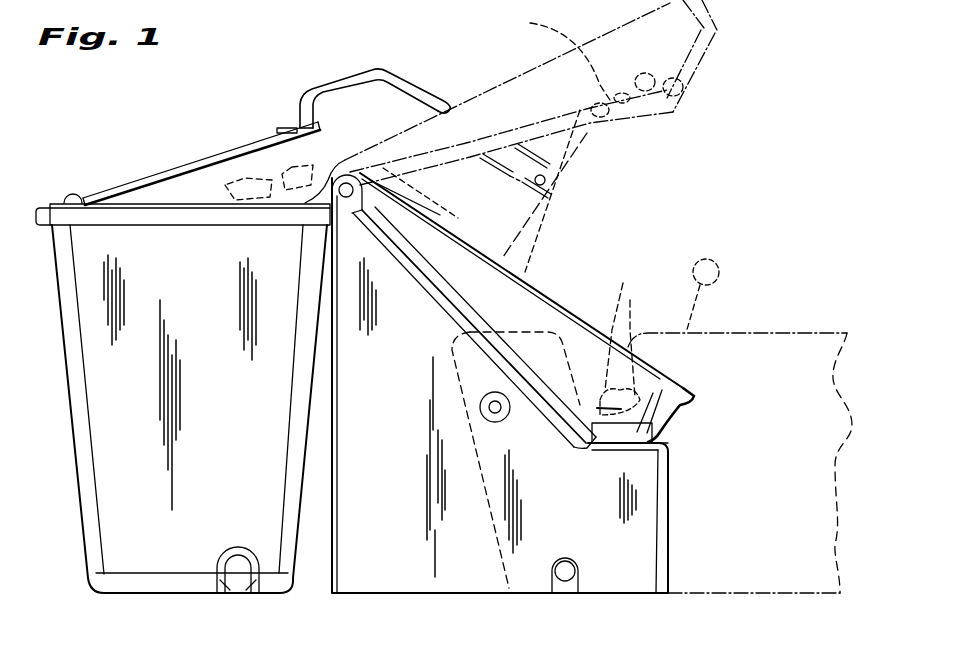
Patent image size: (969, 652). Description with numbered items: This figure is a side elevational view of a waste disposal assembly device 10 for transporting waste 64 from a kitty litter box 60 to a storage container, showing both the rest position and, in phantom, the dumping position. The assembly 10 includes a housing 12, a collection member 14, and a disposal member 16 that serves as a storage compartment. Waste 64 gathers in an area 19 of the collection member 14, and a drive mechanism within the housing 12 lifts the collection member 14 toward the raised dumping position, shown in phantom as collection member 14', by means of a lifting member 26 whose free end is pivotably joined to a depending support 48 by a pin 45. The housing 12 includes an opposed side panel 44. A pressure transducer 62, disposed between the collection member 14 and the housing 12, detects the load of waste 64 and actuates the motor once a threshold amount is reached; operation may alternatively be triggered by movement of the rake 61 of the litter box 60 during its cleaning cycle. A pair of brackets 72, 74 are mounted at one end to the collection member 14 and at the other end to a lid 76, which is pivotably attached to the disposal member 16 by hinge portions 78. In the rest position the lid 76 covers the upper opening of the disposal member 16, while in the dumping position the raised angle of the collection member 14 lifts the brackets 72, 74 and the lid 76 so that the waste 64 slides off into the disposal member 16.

The waste disposal assembly device 10 is at (748, 160).
The housing 12 is at (462, 575).
The collection member 14 is at (665, 358).
The collection member in dumping position 14' is at (568, 92).
The disposal member 16 is at (95, 548).
The area of collection member 19 is at (567, 330).
The lifting member 26 is at (525, 243).
The side panel 44 is at (372, 568).
The pin 45 is at (547, 183).
The depending support 48 is at (578, 147).
The kitty litter box 60 is at (777, 333).
The rake 61 is at (697, 302).
The pressure transducer 62 is at (620, 448).
The waste 64 is at (240, 178).
The bracket 72 is at (336, 88).
The bracket 74 is at (434, 599).
The lid 76 is at (150, 178).
The hinge portion 78 is at (72, 193).